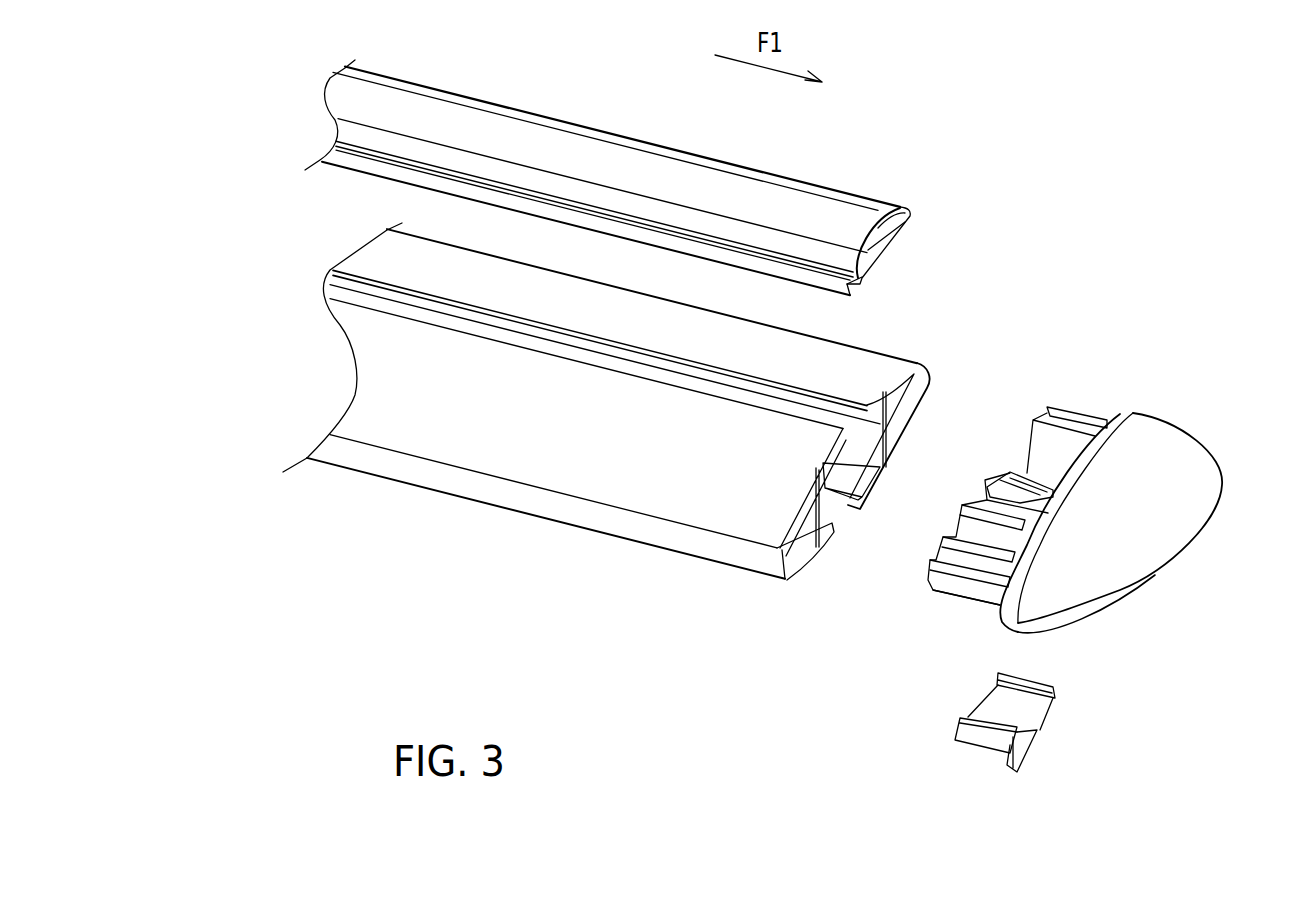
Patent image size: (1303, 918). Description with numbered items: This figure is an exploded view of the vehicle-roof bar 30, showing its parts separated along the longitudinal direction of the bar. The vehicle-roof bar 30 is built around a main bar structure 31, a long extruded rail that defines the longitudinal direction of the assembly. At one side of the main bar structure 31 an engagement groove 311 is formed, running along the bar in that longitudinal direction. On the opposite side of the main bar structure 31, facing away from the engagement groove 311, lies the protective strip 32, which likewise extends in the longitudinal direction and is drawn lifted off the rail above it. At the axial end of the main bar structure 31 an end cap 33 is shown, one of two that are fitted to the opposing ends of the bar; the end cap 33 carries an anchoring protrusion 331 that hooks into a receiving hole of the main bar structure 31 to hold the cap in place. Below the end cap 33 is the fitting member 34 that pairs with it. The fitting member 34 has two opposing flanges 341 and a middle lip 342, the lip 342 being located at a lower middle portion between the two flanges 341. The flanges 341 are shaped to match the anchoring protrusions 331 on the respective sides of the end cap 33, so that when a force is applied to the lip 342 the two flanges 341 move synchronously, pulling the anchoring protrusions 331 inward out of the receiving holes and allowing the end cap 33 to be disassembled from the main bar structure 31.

The vehicle-roof bar 30 is at (1107, 90).
The main bar structure 31 is at (857, 360).
The engagement groove 311 is at (858, 486).
The protective strip 32 is at (823, 188).
The end cap 33 is at (1173, 447).
The anchoring protrusion 331 is at (1002, 490).
The fitting member 34 is at (927, 748).
The flange 341 is at (1003, 722).
The lip 342 is at (1037, 747).